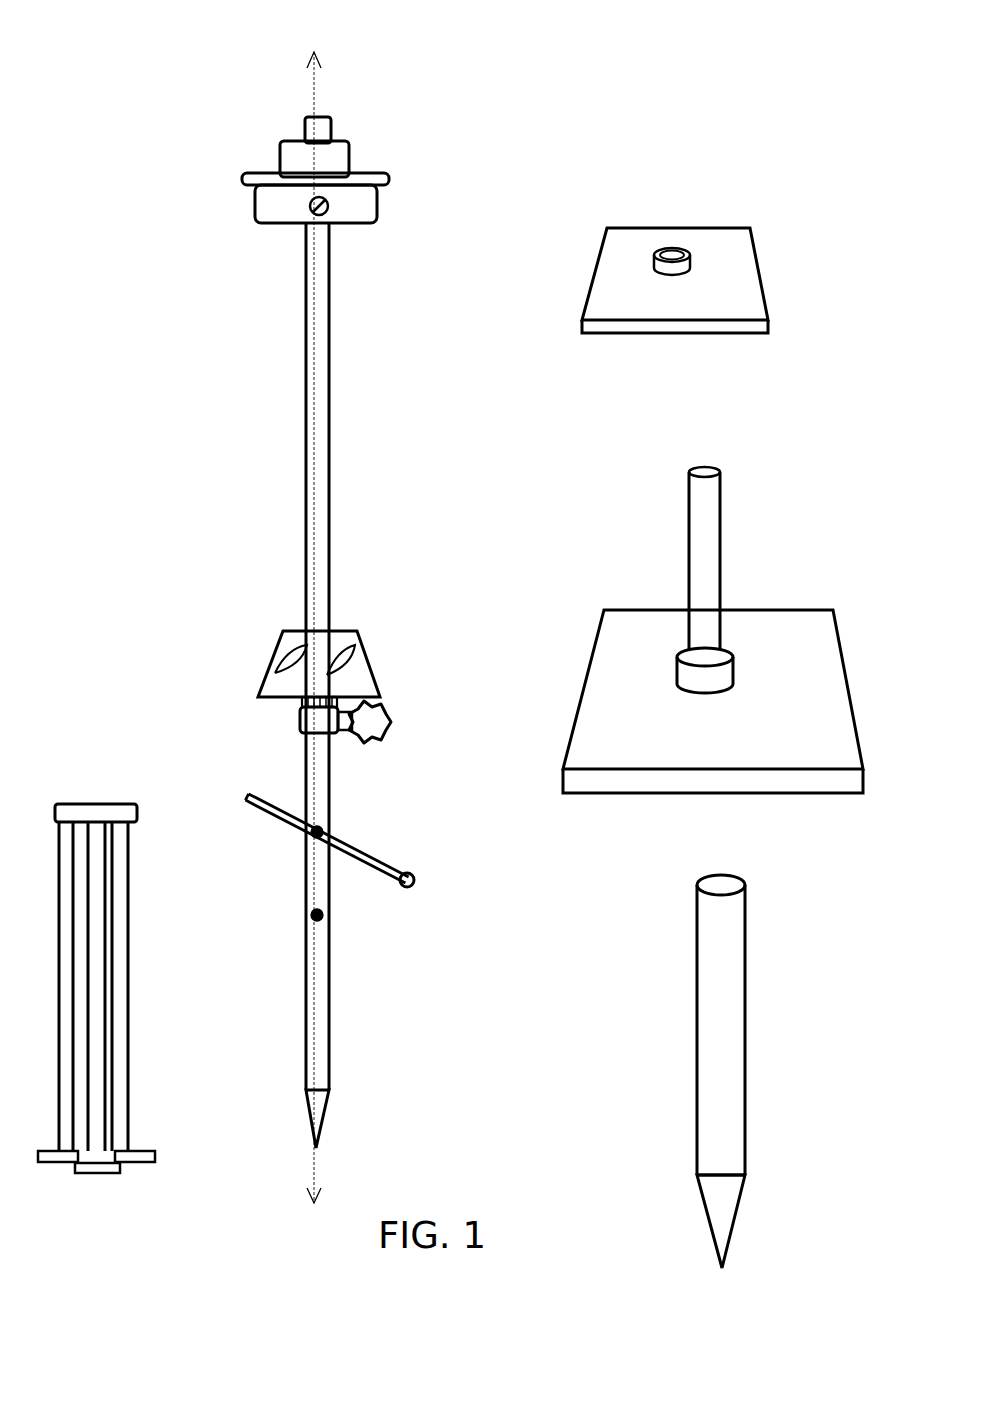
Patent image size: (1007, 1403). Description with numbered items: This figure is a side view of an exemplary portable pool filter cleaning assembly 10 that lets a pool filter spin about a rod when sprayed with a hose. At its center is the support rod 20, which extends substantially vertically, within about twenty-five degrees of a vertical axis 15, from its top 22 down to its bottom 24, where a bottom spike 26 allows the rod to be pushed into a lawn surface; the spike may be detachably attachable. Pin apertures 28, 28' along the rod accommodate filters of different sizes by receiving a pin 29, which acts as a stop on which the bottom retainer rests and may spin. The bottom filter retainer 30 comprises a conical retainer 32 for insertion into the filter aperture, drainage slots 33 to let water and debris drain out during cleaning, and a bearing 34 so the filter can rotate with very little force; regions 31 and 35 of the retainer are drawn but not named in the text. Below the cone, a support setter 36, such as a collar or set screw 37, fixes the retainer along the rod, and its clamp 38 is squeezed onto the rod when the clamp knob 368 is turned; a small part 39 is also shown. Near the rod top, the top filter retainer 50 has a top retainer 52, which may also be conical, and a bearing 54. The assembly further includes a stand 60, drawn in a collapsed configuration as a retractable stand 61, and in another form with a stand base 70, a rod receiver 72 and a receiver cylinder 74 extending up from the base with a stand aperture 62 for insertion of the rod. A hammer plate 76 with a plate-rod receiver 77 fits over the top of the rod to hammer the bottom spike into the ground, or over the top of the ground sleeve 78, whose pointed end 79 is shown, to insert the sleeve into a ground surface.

The portable pool filter cleaning assembly 10 is at (222, 138).
The vertical axis 15 is at (306, 88).
The support rod 20 is at (315, 440).
The top of the support rod 22 is at (323, 122).
The bottom of the support rod 24 is at (305, 1083).
The bottom spike 26 is at (318, 1110).
The pin aperture 28 is at (312, 843).
The pin aperture 28' is at (269, 937).
The pin 29 is at (388, 878).
The bottom filter retainer 30 is at (268, 673).
The shade upper portion 31 is at (348, 625).
The conical retainer 32 is at (300, 640).
The drainage slots 33 is at (355, 652).
The bearing 34 is at (393, 716).
The shade lower portion 35 is at (283, 690).
The support setter 36 is at (303, 727).
The set screw 37 is at (300, 712).
The clamp 38 is at (318, 712).
The threaded boss 39 is at (337, 722).
The clamp knob 368 is at (392, 737).
The top filter retainer 50 is at (243, 181).
The top retainer 52 is at (391, 180).
The bearing 54 is at (350, 162).
The stand 60 is at (630, 645).
The retractable stand 61 is at (101, 812).
The stand aperture 62 is at (698, 470).
The stand base 70 is at (605, 700).
The rod receiver 72 is at (700, 495).
The receiver cylinder 74 is at (702, 565).
The hammer plate 76 is at (638, 300).
The plate-rod receiver 77 is at (673, 256).
The ground sleeve 78 is at (720, 950).
The stake point 79 is at (714, 1220).